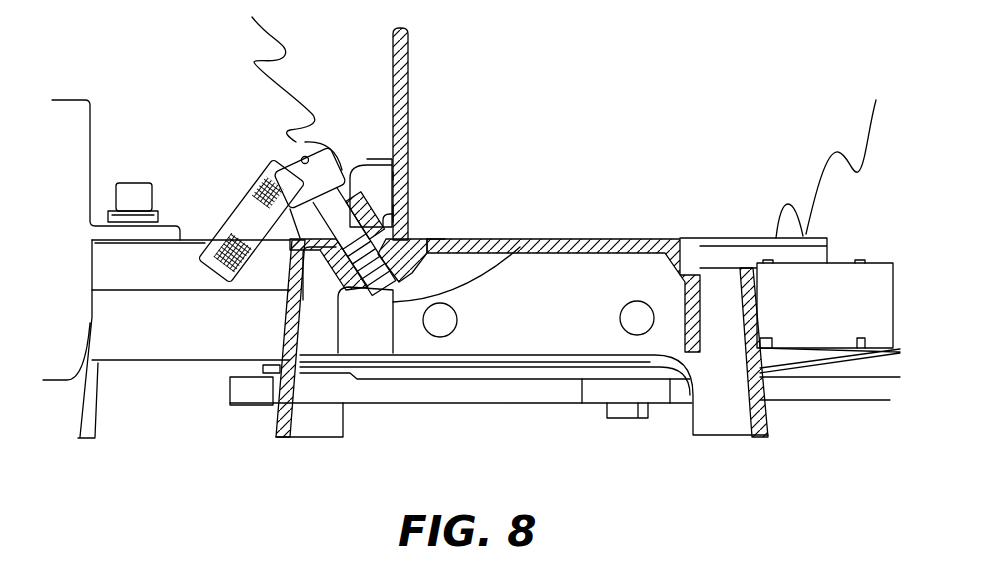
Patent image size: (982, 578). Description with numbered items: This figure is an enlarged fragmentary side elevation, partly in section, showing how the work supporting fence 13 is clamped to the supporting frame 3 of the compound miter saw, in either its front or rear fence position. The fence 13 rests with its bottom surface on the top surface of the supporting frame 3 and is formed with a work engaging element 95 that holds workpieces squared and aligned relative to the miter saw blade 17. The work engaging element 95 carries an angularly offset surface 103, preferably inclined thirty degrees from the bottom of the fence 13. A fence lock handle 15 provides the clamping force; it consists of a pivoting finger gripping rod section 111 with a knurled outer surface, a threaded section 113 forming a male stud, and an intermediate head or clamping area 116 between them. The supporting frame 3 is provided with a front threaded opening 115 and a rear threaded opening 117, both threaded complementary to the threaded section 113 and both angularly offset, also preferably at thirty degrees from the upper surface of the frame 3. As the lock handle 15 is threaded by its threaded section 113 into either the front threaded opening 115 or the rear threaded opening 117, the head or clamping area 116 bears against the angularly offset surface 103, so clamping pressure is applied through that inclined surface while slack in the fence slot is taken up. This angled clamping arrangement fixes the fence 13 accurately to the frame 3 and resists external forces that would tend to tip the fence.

The supporting frame 3 is at (578, 240).
The work supporting fence 13 is at (411, 88).
The fence lock handle 15 is at (277, 165).
The miter saw blade 17 is at (308, 70).
The work engaging element 95 is at (410, 214).
The angularly offset surface 103 is at (357, 178).
The pivoting finger gripping rod section 111 is at (248, 208).
The threaded section 113 is at (412, 175).
The front threaded opening 115 is at (432, 239).
The head or clamping area 116 is at (334, 165).
The rear threaded opening 117 is at (487, 240).